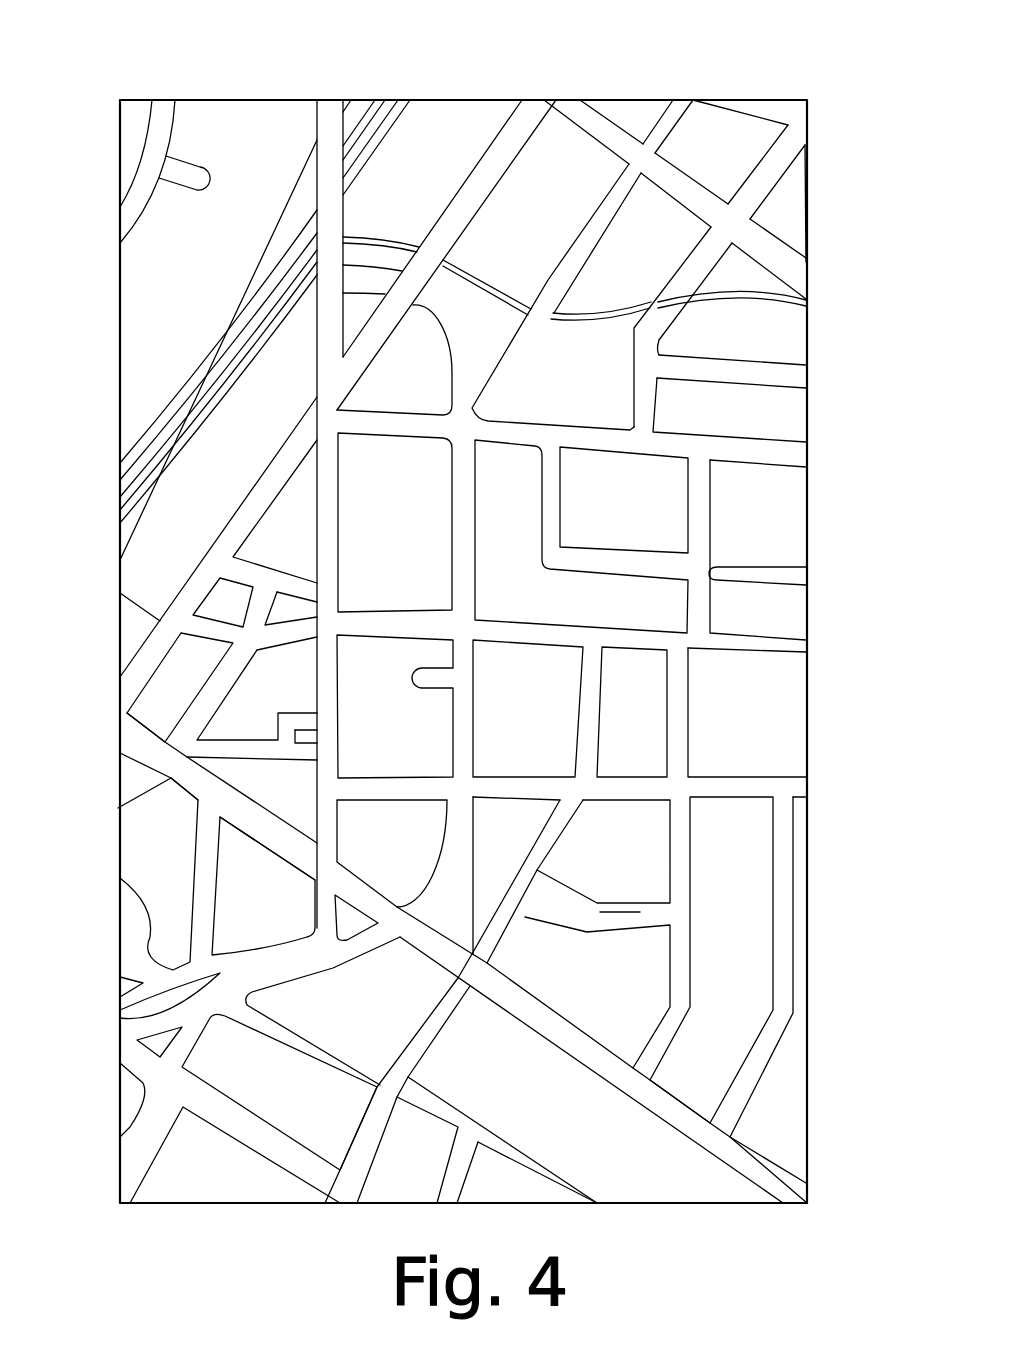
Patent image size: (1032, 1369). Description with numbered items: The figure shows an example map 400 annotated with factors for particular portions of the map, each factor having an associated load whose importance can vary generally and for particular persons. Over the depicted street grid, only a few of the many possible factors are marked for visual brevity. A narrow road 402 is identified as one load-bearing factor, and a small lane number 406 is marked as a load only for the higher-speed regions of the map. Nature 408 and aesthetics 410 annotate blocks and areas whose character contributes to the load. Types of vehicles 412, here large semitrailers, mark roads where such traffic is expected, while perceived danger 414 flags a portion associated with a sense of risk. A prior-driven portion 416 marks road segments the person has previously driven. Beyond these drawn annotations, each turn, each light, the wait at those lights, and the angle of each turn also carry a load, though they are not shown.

The map 400 is at (115, 42).
The narrow road 402 is at (620, 915).
The small lane number 406 is at (314, 234).
The nature 408 is at (786, 890).
The aesthetics 410 is at (404, 624).
The types of vehicles 412 is at (480, 163).
The perceived danger 414 is at (441, 221).
The prior-driven portion 416 is at (541, 1011).